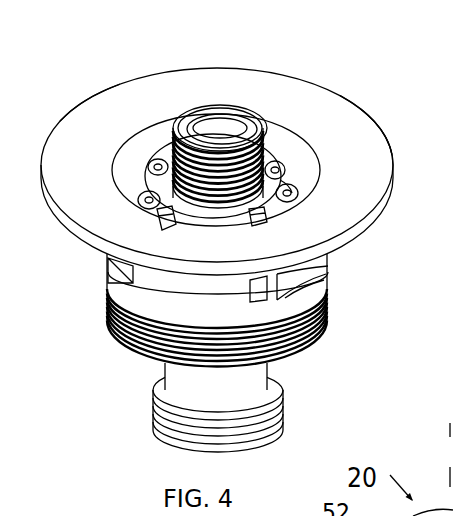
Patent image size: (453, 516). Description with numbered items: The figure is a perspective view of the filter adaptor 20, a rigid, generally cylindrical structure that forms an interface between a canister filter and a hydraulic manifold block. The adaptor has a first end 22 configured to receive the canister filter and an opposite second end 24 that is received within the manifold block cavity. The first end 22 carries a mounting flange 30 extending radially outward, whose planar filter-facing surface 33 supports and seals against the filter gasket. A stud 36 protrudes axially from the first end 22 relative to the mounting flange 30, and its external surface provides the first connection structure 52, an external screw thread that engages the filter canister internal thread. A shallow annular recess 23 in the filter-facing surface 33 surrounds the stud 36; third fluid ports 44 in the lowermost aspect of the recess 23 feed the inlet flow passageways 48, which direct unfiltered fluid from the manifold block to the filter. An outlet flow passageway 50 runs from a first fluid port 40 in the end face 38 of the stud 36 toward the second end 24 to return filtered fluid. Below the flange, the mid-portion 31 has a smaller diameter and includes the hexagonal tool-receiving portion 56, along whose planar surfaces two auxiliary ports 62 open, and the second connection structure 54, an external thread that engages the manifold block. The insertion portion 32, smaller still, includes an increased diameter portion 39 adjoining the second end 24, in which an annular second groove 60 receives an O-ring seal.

The filter adaptor 20 is at (103, 44).
The first end 22 is at (316, 116).
The annular recess 23 is at (133, 160).
The second end 24 is at (273, 437).
The mounting flange 30 is at (363, 144).
The filter-facing surface 33 is at (370, 136).
The mid-portion 31 is at (358, 257).
The insertion portion 32 is at (131, 390).
The stud 36 is at (173, 167).
The end face of the stud 38 is at (193, 114).
The increased diameter portion 39 is at (279, 397).
The first fluid port 40 is at (168, 216).
The third fluid ports 44 is at (148, 202).
The inlet flow passageways 48 is at (299, 148).
The outlet flow passageway 50 is at (219, 128).
The first connection structure 52 is at (285, 184).
The second connection structure 54 is at (329, 322).
The tool-receiving portion 56 is at (106, 280).
The second groove 60 is at (156, 424).
The auxiliary ports 62 is at (333, 277).